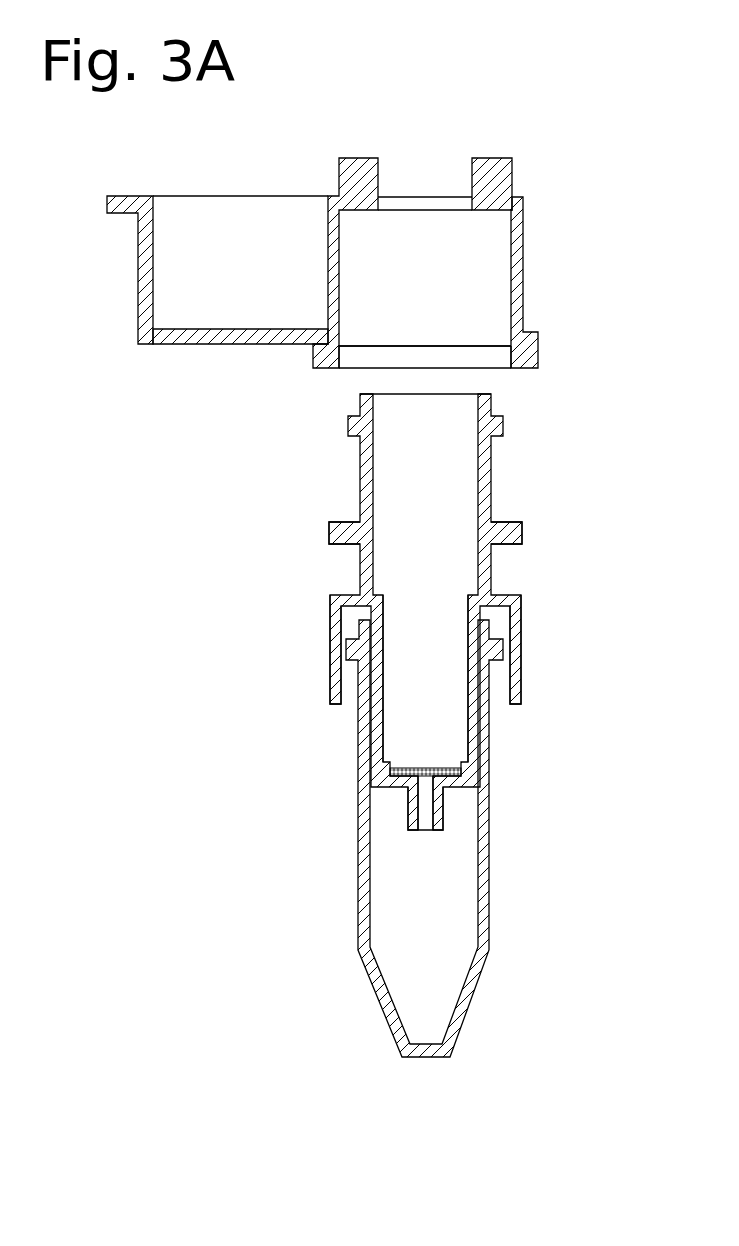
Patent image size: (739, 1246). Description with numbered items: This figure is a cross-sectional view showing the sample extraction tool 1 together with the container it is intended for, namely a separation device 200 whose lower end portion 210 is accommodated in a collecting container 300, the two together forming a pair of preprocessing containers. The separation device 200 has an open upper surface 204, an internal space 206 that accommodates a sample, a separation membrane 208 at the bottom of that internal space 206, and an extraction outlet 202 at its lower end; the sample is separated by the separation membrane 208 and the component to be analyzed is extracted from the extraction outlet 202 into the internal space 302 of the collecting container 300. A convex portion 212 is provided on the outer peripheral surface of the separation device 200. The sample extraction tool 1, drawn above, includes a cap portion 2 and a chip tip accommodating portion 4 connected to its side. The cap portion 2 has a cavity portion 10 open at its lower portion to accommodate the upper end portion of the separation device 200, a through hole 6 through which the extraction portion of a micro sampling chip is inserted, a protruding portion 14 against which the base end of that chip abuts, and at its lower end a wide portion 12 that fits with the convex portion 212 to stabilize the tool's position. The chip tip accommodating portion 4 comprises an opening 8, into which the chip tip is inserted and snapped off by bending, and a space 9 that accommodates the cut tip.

The sample extraction tool 1 is at (540, 190).
The cap portion 2 is at (525, 252).
The chip tip accommodating portion 4 is at (137, 293).
The through hole 6 is at (425, 207).
The opening 8 is at (228, 197).
The space 9 is at (212, 297).
The cavity portion 10 is at (460, 291).
The wide portion 12 is at (338, 355).
The protruding portion 14 is at (496, 157).
The separation device 200 is at (358, 483).
The extraction outlet 202 is at (427, 830).
The open upper surface 204 is at (427, 394).
The internal space 206 is at (418, 722).
The separation membrane 208 is at (430, 770).
The lower end portion 210 is at (483, 713).
The convex portion 212 is at (340, 533).
The collecting container 300 is at (360, 850).
The internal space 302 is at (402, 912).